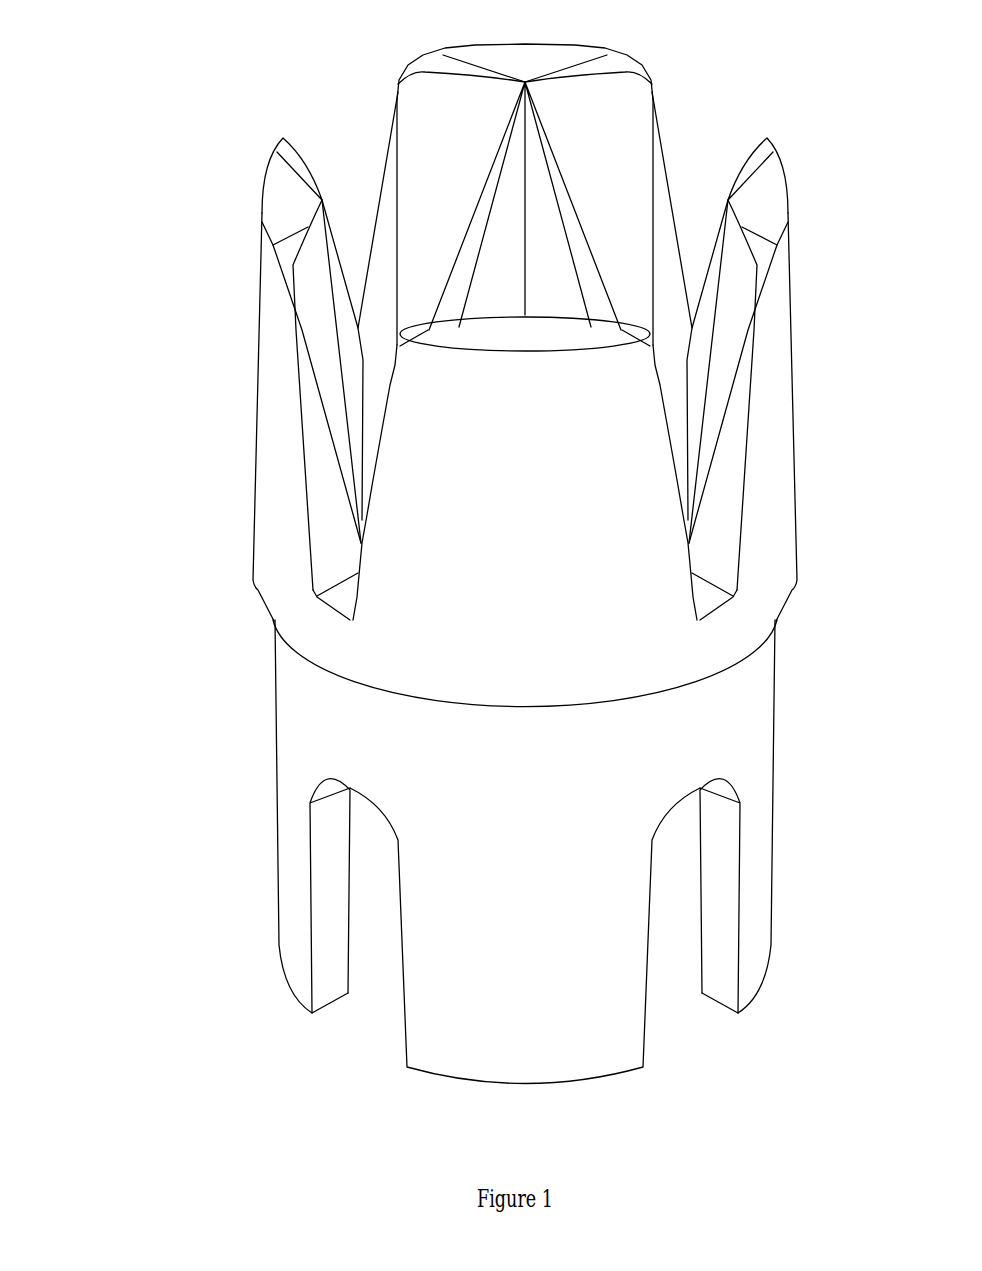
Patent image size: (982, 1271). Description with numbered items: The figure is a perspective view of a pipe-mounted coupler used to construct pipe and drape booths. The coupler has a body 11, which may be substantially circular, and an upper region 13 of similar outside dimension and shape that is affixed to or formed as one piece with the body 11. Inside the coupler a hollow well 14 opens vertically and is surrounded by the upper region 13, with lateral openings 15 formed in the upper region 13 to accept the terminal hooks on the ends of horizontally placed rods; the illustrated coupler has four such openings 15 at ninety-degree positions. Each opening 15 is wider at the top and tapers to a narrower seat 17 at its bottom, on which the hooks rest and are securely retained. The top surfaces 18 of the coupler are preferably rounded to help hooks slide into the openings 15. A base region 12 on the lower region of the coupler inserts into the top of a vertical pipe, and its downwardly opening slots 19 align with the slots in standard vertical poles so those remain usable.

The body 11 is at (525, 663).
The base region 12 is at (388, 738).
The upper region 13 is at (770, 425).
The hollow well 14 is at (500, 217).
The opening 15 is at (323, 462).
The seat 17 is at (342, 597).
The top surfaces 18 is at (767, 179).
The slots 19 is at (720, 945).